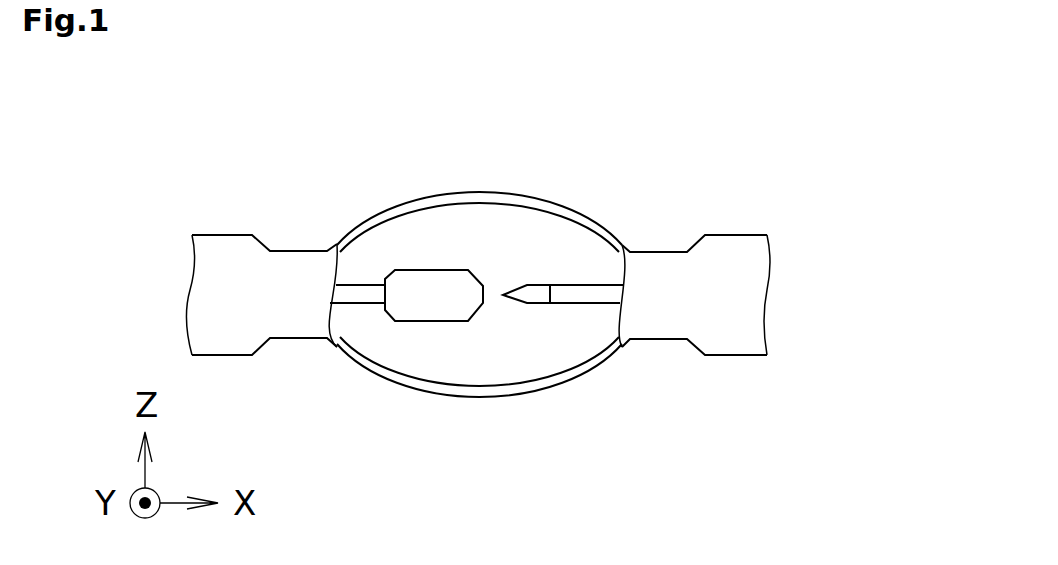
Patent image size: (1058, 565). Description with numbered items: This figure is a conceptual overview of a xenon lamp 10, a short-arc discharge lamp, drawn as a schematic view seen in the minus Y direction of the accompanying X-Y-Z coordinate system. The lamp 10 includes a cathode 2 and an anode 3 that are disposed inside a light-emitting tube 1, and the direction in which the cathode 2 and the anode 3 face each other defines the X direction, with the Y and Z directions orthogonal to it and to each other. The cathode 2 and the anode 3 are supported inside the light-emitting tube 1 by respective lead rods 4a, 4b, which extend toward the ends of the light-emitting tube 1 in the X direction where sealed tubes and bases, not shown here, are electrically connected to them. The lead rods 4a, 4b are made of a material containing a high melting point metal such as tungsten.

The lamp 10 is at (297, 179).
The light-emitting tube 1 is at (590, 227).
The cathode 2 is at (527, 293).
The anode 3 is at (430, 285).
The lead rod 4a is at (580, 303).
The lead rod 4b is at (353, 303).